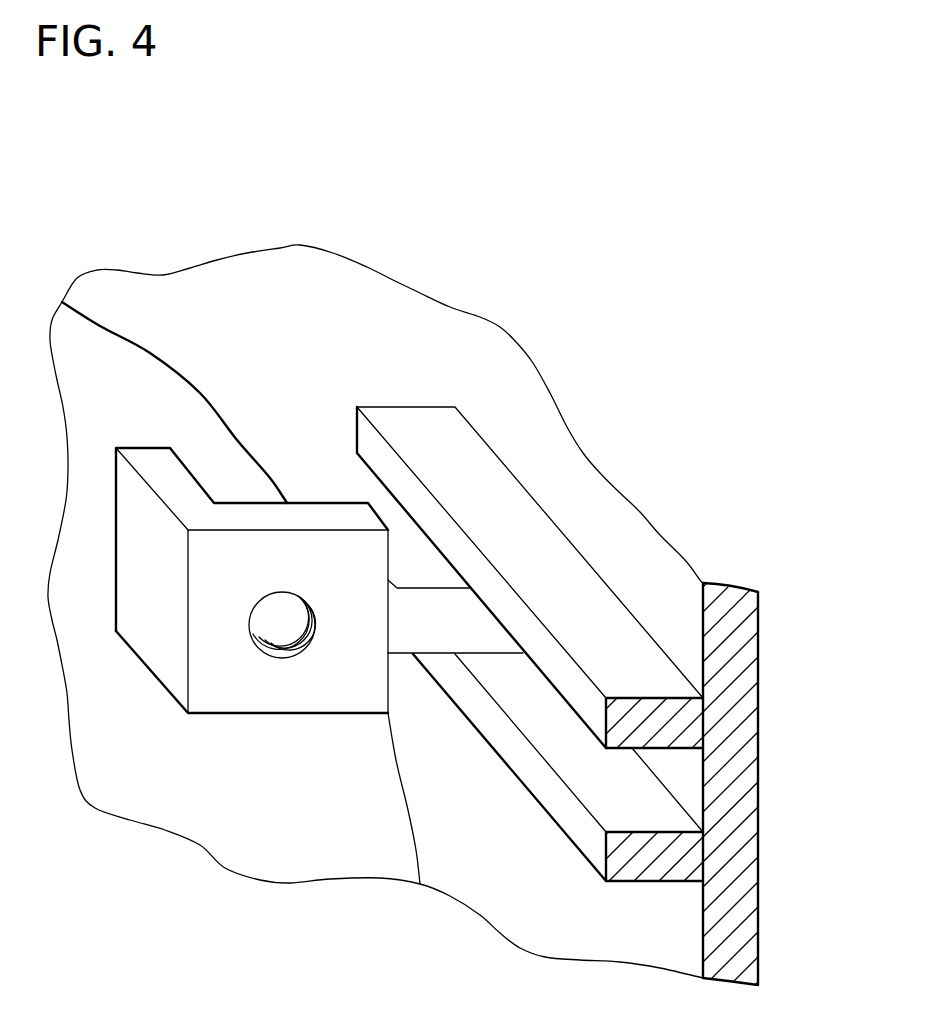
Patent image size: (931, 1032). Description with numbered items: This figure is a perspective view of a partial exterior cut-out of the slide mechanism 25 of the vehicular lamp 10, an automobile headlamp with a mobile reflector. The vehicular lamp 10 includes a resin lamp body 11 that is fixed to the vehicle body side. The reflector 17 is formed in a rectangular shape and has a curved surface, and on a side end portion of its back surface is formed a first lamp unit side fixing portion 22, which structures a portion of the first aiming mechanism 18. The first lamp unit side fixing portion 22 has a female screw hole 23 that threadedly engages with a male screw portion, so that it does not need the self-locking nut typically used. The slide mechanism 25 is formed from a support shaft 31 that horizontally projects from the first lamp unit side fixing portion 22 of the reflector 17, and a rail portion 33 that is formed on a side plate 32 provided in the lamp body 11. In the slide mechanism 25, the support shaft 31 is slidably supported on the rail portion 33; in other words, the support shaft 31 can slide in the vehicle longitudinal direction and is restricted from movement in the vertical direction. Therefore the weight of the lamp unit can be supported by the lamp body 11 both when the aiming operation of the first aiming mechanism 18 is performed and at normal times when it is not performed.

The vehicular lamp 10 is at (632, 296).
The lamp body 11 is at (493, 343).
The reflector 17 is at (148, 351).
The first aiming mechanism 18 is at (320, 374).
The first lamp unit side fixing portion 22 is at (238, 702).
The female screw hole 23 is at (294, 656).
The slide mechanism 25 is at (445, 762).
The support shaft 31 is at (470, 622).
The side plate 32 is at (685, 636).
The rail portion 33 is at (642, 803).